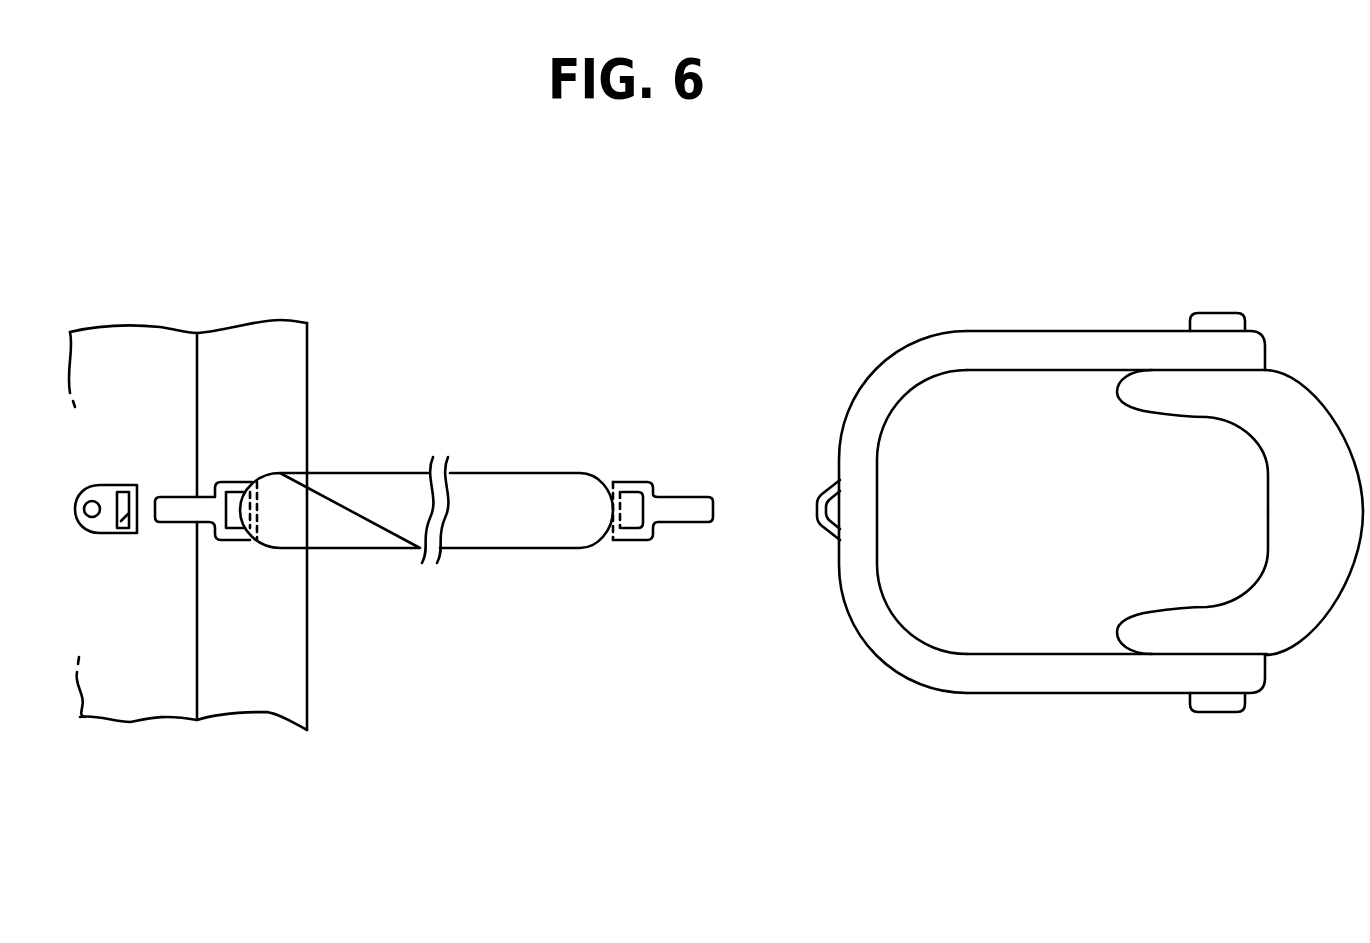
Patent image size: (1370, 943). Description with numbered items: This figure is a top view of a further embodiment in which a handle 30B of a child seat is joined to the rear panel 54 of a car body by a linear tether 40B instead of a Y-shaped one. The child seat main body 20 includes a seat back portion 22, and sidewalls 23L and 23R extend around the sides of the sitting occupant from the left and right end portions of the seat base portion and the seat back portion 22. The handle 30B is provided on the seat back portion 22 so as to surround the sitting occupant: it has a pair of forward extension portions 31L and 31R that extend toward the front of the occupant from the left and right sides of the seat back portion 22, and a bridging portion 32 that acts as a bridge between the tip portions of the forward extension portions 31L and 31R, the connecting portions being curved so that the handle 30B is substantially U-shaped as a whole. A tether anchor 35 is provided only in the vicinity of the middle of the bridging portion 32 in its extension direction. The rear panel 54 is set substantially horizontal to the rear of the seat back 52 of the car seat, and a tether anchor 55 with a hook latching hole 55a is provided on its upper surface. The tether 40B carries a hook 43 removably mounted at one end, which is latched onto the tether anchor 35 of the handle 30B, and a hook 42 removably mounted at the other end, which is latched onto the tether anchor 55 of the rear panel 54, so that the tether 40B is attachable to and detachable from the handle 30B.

The child seat main body 20 is at (1076, 554).
The seat back portion 22 is at (1231, 512).
The sidewall 23R is at (1130, 405).
The sidewall 23L is at (1130, 620).
The handle 30B is at (1028, 554).
The forward extension portion 31R is at (1020, 370).
The forward extension portion 31L is at (1037, 653).
The bridging portion 32 is at (878, 507).
The tether anchor 35 is at (827, 537).
The tether 40B is at (503, 488).
The hook 42 is at (173, 507).
The hook 43 is at (680, 497).
The seat back 52 is at (292, 670).
The rear panel 54 is at (141, 708).
The tether anchor 55 is at (96, 547).
The hook latching hole 55a is at (122, 530).